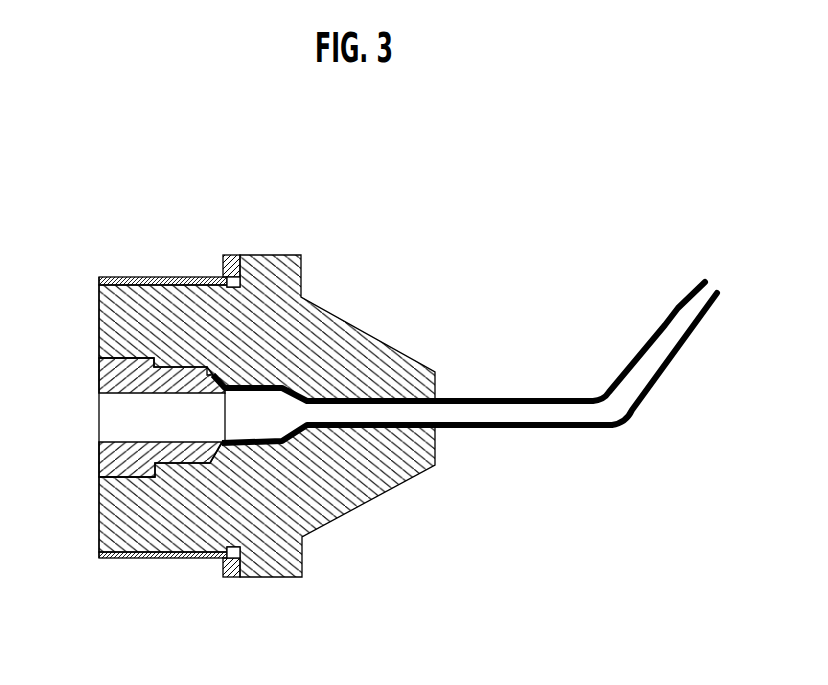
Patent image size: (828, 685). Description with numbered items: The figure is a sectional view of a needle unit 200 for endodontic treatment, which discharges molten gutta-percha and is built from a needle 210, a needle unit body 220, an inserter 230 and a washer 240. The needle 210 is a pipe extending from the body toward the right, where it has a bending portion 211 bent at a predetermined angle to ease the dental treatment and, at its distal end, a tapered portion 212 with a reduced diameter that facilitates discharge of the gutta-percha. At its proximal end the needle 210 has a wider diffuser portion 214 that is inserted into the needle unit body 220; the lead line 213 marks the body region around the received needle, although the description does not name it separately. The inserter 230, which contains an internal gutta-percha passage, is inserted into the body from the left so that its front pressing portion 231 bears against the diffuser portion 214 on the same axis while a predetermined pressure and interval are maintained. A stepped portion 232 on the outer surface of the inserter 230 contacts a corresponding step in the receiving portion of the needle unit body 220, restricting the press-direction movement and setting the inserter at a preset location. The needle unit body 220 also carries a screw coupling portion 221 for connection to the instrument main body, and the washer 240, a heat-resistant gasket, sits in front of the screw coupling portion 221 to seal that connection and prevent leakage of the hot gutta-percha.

The needle unit 200 is at (420, 295).
The needle 210 is at (515, 388).
The bending portion 211 is at (627, 413).
The tapered portion 212 is at (697, 295).
The nozzle body bore 213 is at (303, 478).
The diffuser portion 214 is at (285, 447).
The needle unit body 220 is at (300, 275).
The screw coupling portion 221 is at (122, 277).
The inserter 230 is at (110, 378).
The pressing portion 231 is at (208, 375).
The stepped portion 232 is at (153, 470).
The washer 240 is at (230, 257).